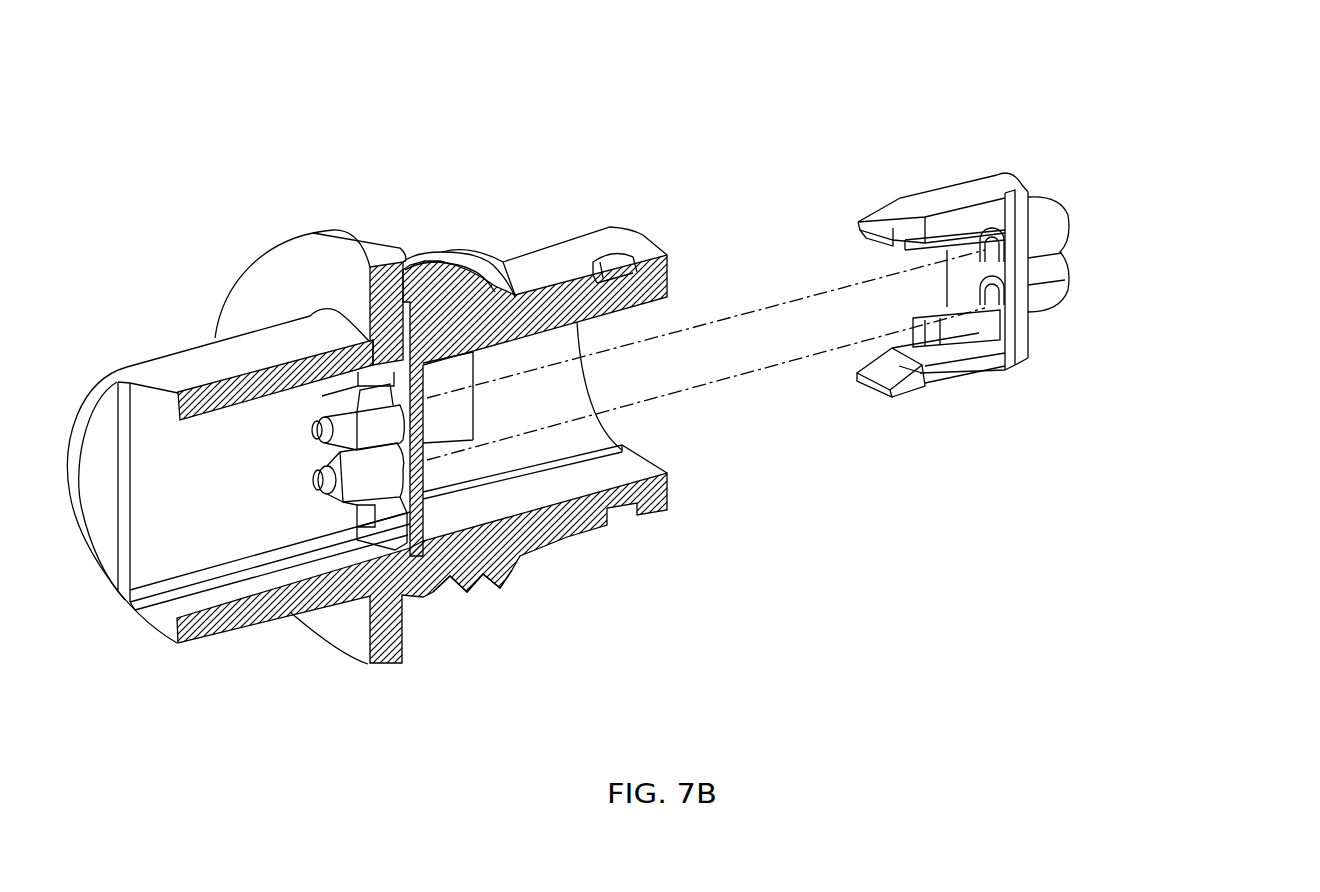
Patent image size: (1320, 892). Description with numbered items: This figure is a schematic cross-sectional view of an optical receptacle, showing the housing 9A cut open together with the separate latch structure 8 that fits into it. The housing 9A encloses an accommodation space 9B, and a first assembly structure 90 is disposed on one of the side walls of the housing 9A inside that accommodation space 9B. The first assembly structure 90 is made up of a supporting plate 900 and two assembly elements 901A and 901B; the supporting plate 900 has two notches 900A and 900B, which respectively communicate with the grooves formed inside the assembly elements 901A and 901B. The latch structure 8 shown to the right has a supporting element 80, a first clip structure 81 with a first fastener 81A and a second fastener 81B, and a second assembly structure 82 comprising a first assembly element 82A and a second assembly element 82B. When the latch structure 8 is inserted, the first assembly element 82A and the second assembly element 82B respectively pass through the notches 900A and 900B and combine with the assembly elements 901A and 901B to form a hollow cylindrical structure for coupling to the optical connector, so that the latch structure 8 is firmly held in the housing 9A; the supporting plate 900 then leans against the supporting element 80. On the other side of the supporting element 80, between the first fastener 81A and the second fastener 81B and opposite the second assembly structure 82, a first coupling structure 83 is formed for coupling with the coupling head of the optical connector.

The housing 9A is at (150, 360).
The accommodation space 9B is at (214, 496).
The supporting plate 900 is at (420, 477).
The notch 900A is at (440, 300).
The notch 900B is at (442, 587).
The first assembly structure 90 is at (387, 473).
The assembly element 901A is at (323, 458).
The assembly element 901B is at (362, 488).
The latch structure 8 is at (1022, 288).
The supporting element 80 is at (1022, 287).
The first clip structure 81 is at (893, 210).
The first fastener 81A is at (890, 213).
The second fastener 81B is at (897, 373).
The second assembly structure 82 is at (985, 325).
The first assembly element 82A is at (960, 237).
The second assembly element 82B is at (970, 333).
The first coupling structure 83 is at (1042, 233).